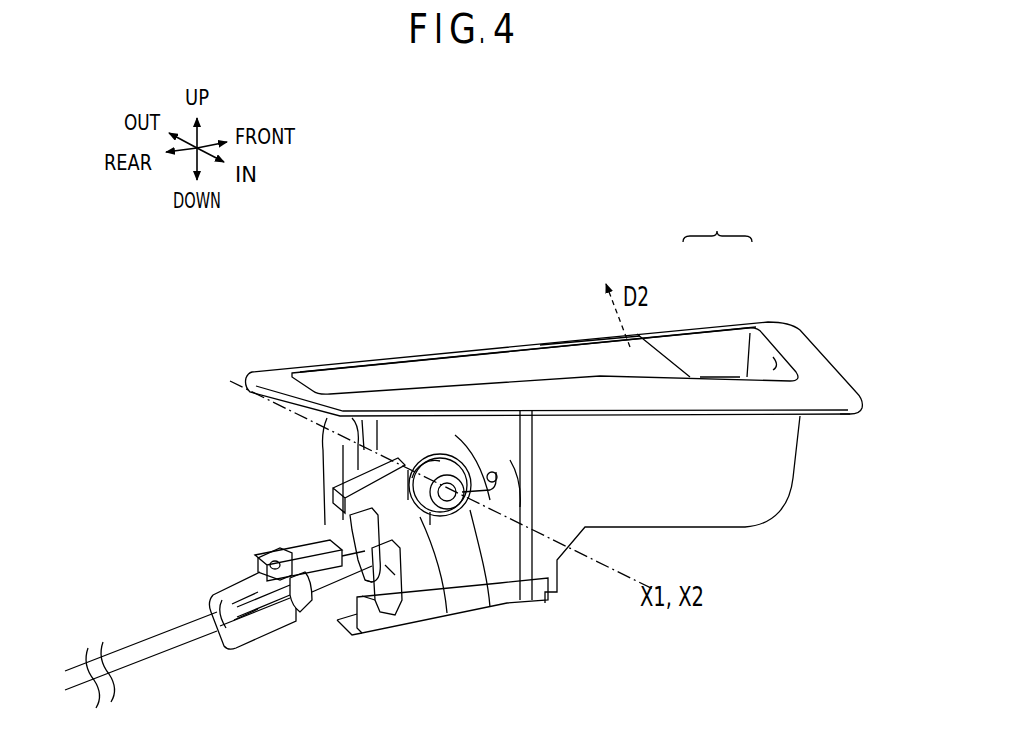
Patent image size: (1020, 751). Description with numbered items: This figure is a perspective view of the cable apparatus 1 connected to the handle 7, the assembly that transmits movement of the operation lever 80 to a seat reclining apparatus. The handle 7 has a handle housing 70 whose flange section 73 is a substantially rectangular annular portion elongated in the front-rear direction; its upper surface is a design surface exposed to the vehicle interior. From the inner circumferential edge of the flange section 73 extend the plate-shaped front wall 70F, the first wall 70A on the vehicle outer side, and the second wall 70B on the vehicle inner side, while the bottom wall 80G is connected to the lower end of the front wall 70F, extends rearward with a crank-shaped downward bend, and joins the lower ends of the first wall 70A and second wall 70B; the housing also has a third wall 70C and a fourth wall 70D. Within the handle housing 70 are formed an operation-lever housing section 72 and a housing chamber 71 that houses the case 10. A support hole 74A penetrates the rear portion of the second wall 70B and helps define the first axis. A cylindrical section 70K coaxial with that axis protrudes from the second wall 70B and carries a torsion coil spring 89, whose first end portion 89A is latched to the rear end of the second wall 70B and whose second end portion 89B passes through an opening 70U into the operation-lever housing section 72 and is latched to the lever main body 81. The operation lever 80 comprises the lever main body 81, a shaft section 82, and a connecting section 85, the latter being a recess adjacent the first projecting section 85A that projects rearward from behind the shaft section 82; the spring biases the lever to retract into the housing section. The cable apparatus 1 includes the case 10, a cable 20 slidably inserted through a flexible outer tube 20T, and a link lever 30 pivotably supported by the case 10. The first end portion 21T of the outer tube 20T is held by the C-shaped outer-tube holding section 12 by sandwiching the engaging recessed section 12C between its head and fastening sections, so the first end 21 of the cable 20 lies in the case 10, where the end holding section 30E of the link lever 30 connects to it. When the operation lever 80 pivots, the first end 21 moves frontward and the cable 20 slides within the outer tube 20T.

The cable apparatus 1 is at (167, 593).
The handle 7 is at (717, 221).
The case 10 is at (293, 633).
The outer-tube holding section 12 is at (237, 648).
The engaging recessed section 12C is at (260, 580).
The cable 20 is at (312, 555).
The outer tube 20T is at (115, 663).
The first end 21 is at (400, 575).
The first end portion 21T is at (227, 600).
The link lever 30 is at (353, 582).
The end holding section 30E is at (362, 600).
The handle housing 70 is at (723, 320).
The first wall 70A is at (707, 347).
The second wall 70B is at (748, 465).
The third wall 70C is at (390, 572).
The fourth wall 70D is at (330, 427).
The front wall 70F is at (773, 357).
The cylindrical section 70K is at (433, 455).
The opening 70U is at (504, 477).
The housing chamber 71 is at (338, 440).
The operation-lever housing section 72 is at (706, 376).
The flange section 73 is at (813, 397).
The support hole 74A is at (468, 515).
The operation lever 80 is at (662, 350).
The bottom wall 80G is at (723, 527).
The lever main body 81 is at (542, 360).
The shaft section 82 is at (450, 470).
The connecting section 85 is at (345, 517).
The first projecting section 85A is at (363, 503).
The torsion coil spring 89 is at (465, 495).
The first end portion 89A is at (425, 515).
The second end portion 89B is at (497, 488).